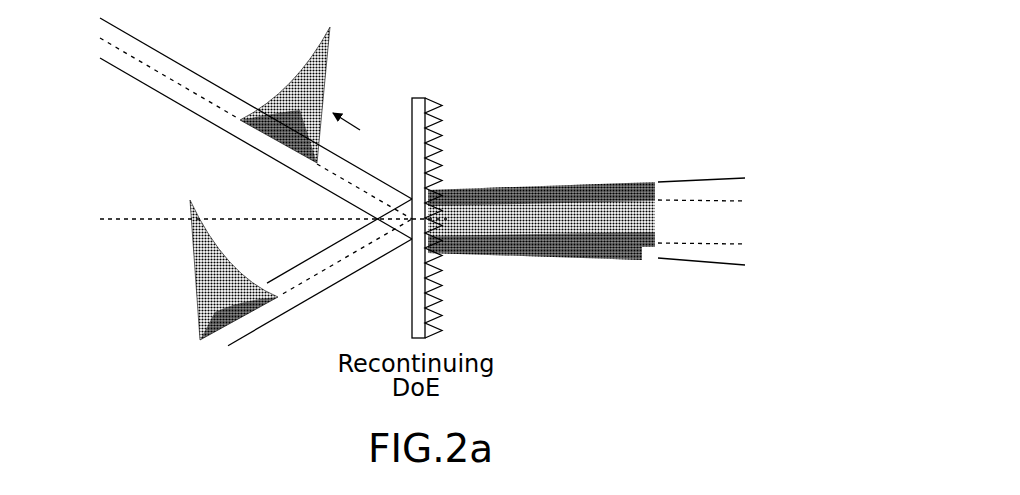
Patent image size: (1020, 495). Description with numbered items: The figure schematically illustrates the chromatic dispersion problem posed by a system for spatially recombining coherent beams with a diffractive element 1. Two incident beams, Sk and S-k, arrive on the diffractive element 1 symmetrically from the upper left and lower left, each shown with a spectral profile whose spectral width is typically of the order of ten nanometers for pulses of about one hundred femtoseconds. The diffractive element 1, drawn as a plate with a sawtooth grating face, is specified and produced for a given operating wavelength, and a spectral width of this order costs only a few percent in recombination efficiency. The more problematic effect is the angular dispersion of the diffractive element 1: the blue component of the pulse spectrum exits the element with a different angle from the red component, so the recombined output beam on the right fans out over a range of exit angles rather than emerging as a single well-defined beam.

The diffractive element 1 is at (422, 98).
The incident beam of order k Sk is at (237, 128).
The incident beam of order -k S-k is at (284, 285).